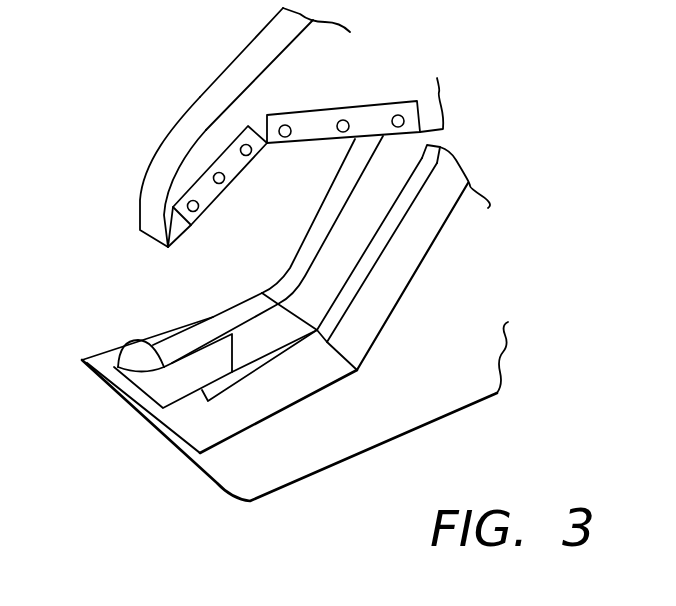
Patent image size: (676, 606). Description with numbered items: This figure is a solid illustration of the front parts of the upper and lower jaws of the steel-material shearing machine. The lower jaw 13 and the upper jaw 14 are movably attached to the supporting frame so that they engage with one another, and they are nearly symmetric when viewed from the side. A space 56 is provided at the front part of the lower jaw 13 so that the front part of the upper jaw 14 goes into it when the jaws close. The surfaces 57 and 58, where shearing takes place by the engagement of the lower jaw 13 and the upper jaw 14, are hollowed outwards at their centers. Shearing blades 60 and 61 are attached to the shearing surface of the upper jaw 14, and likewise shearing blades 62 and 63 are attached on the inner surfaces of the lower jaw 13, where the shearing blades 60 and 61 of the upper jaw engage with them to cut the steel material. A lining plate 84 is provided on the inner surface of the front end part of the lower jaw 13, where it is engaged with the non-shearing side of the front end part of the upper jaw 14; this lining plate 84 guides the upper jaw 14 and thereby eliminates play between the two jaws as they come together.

The lower jaw 13 is at (450, 396).
The upper jaw 14 is at (256, 78).
The space 56 is at (316, 285).
The shearing surface 57 is at (245, 338).
The shearing surface 58 is at (224, 199).
The shearing blade 60 is at (202, 182).
The shearing blade 61 is at (362, 113).
The shearing blade 62 is at (256, 368).
The shearing blade 63 is at (395, 212).
The lining plate 84 is at (134, 362).